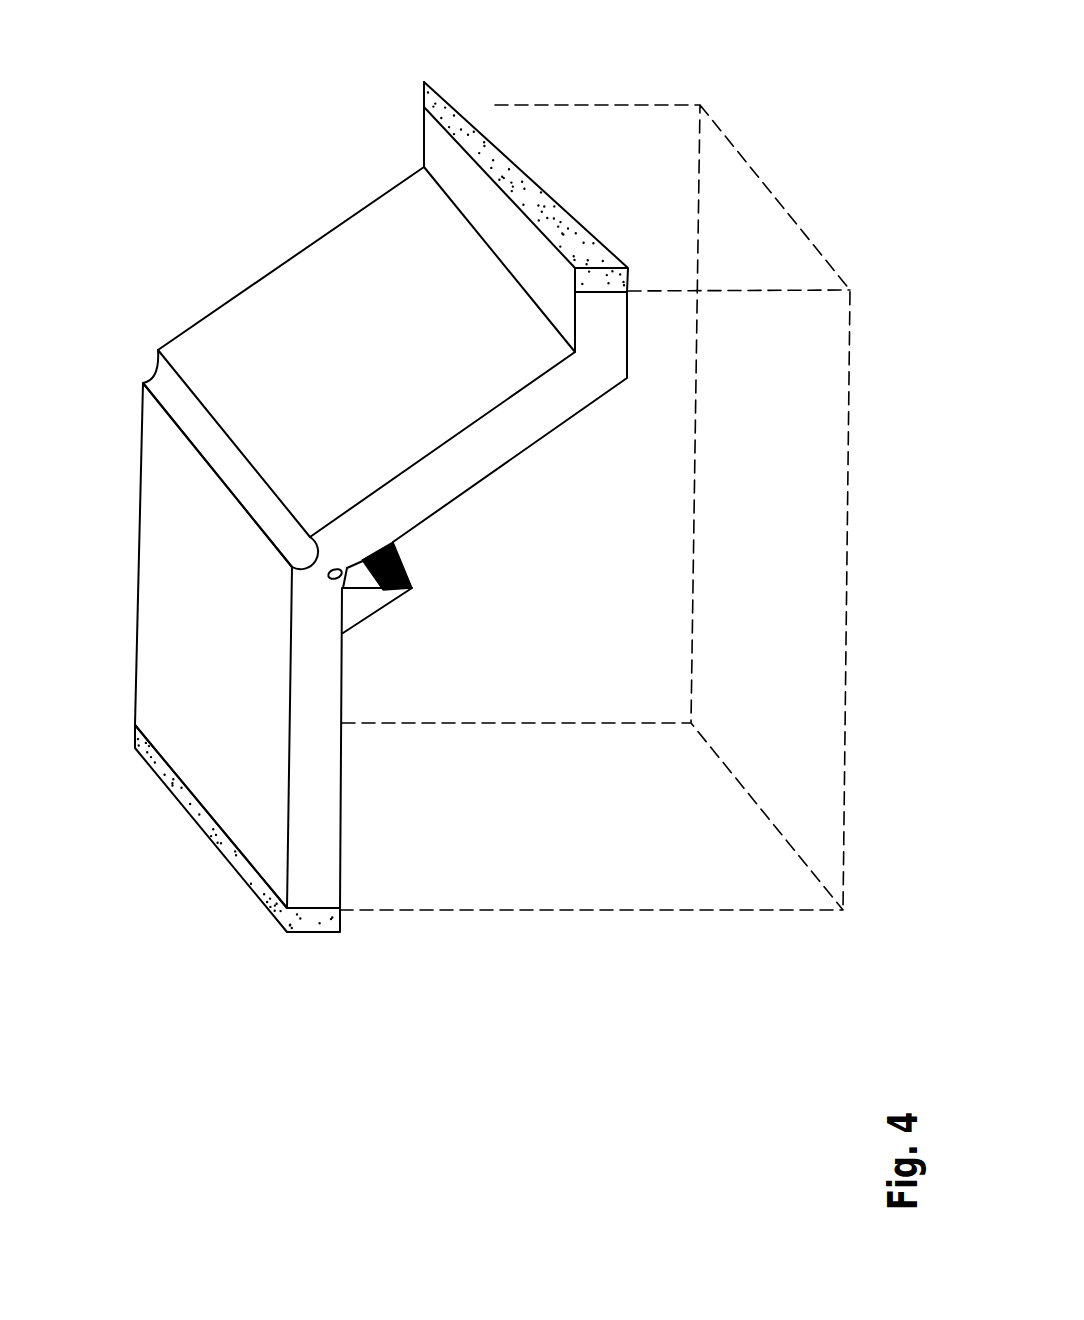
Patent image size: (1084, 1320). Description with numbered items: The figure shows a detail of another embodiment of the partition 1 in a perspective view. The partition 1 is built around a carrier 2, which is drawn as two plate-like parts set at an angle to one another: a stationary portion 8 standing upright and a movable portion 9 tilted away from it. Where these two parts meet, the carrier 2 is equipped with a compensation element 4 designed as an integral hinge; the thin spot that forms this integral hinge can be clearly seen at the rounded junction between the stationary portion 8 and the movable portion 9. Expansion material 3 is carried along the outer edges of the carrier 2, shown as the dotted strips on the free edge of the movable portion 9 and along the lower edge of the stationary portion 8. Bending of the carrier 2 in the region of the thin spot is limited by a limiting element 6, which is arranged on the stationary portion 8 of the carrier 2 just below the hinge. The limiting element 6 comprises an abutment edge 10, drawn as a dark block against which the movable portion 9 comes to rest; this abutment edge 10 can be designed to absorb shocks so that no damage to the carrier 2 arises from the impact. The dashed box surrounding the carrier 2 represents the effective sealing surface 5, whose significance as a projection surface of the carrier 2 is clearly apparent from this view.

The partition 1 is at (243, 170).
The carrier 2 is at (173, 483).
The expansion material 3 is at (458, 92).
The compensation element 4 is at (185, 397).
The effective sealing surface 5 is at (817, 850).
The limiting element 6 is at (370, 598).
The stationary portion 8 is at (173, 665).
The movable portion 9 is at (377, 233).
The abutment edge 10 is at (403, 553).